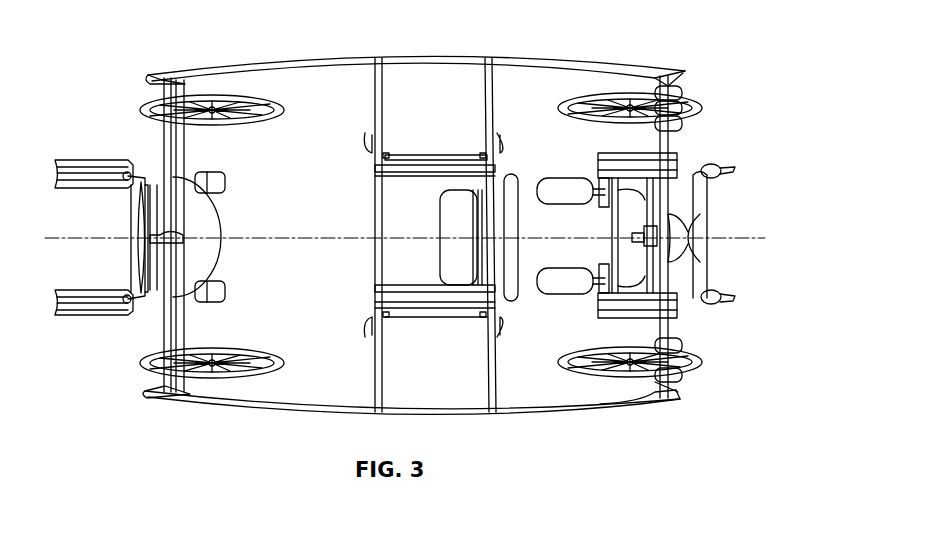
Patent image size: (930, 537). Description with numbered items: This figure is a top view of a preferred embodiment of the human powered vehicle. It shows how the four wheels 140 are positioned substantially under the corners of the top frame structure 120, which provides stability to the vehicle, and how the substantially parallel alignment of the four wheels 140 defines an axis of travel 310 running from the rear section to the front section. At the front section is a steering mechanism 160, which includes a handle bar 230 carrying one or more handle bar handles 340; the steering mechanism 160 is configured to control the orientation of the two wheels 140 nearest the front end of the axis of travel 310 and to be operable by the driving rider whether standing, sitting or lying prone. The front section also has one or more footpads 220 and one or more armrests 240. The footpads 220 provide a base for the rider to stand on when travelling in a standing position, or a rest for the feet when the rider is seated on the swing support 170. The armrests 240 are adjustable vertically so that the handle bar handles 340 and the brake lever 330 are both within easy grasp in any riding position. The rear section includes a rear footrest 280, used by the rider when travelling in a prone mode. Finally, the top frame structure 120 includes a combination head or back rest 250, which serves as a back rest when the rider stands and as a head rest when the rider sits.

The top frame structure 120 is at (300, 410).
The wheels 140 is at (222, 378).
The steering mechanism 160 is at (715, 233).
The swing support 170 is at (456, 205).
The footpads 220 is at (563, 185).
The handle bar 230 is at (703, 200).
The armrests 240 is at (618, 305).
The combination head or back rest 250 is at (510, 172).
The rear footrest 280 is at (205, 256).
The axis of travel 310 is at (52, 238).
The brake lever 330 is at (722, 303).
The handle bar handles 340 is at (702, 305).